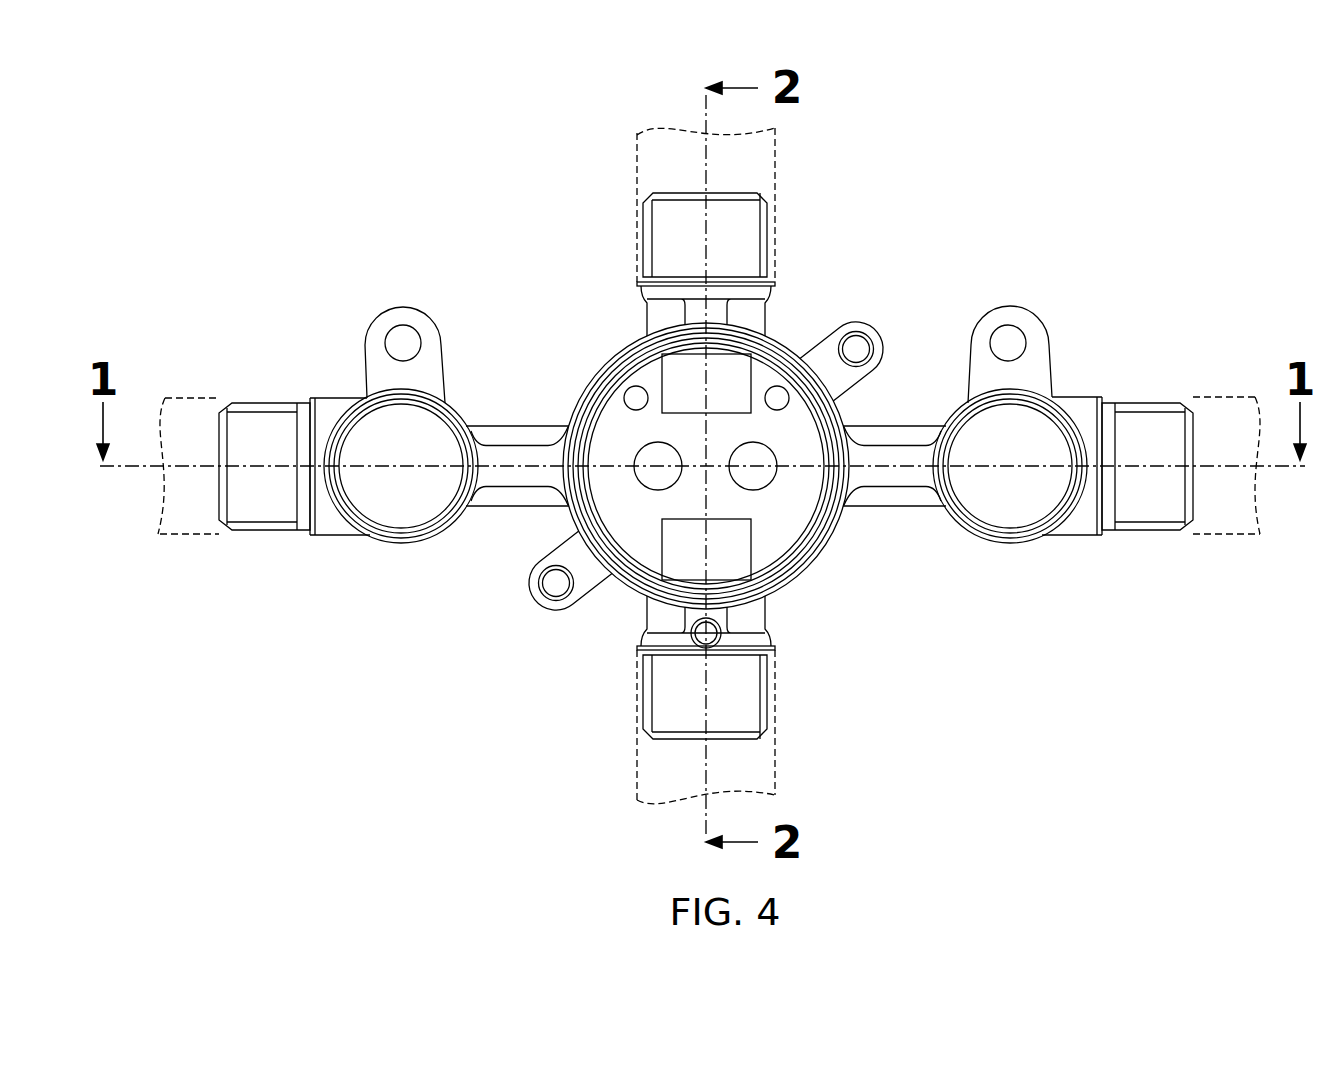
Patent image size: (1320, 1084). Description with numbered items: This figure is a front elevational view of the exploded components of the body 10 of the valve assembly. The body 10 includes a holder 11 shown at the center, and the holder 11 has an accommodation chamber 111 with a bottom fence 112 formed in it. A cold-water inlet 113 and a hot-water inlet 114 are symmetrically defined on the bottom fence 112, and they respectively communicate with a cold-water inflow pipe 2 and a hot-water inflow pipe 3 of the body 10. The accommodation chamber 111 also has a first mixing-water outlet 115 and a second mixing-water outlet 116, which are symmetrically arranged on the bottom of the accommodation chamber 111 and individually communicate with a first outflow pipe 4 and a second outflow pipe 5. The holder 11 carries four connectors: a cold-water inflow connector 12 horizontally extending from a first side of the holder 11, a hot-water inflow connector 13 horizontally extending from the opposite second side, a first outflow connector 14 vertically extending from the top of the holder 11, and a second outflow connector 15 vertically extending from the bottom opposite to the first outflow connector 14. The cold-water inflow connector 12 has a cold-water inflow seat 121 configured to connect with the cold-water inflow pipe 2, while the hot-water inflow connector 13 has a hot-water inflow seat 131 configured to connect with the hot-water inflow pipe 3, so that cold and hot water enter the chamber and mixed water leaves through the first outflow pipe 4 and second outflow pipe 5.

The body 10 is at (622, 330).
The holder 11 is at (580, 387).
The accommodation chamber 111 is at (790, 520).
The bottom fence 112 is at (637, 543).
The cold-water inlet 113 is at (650, 451).
The hot-water inlet 114 is at (760, 455).
The first mixing-water outlet 115 is at (733, 375).
The second mixing-water outlet 116 is at (737, 558).
The cold-water inflow connector 12 is at (510, 507).
The cold-water inflow seat 121 is at (270, 535).
The hot-water inflow connector 13 is at (900, 510).
The hot-water inflow seat 131 is at (1140, 538).
The first outflow connector 14 is at (645, 232).
The second outflow connector 15 is at (773, 683).
The cold-water inflow pipe 2 is at (185, 560).
The hot-water inflow pipe 3 is at (1210, 560).
The first outflow pipe 4 is at (785, 148).
The second outflow pipe 5 is at (778, 790).